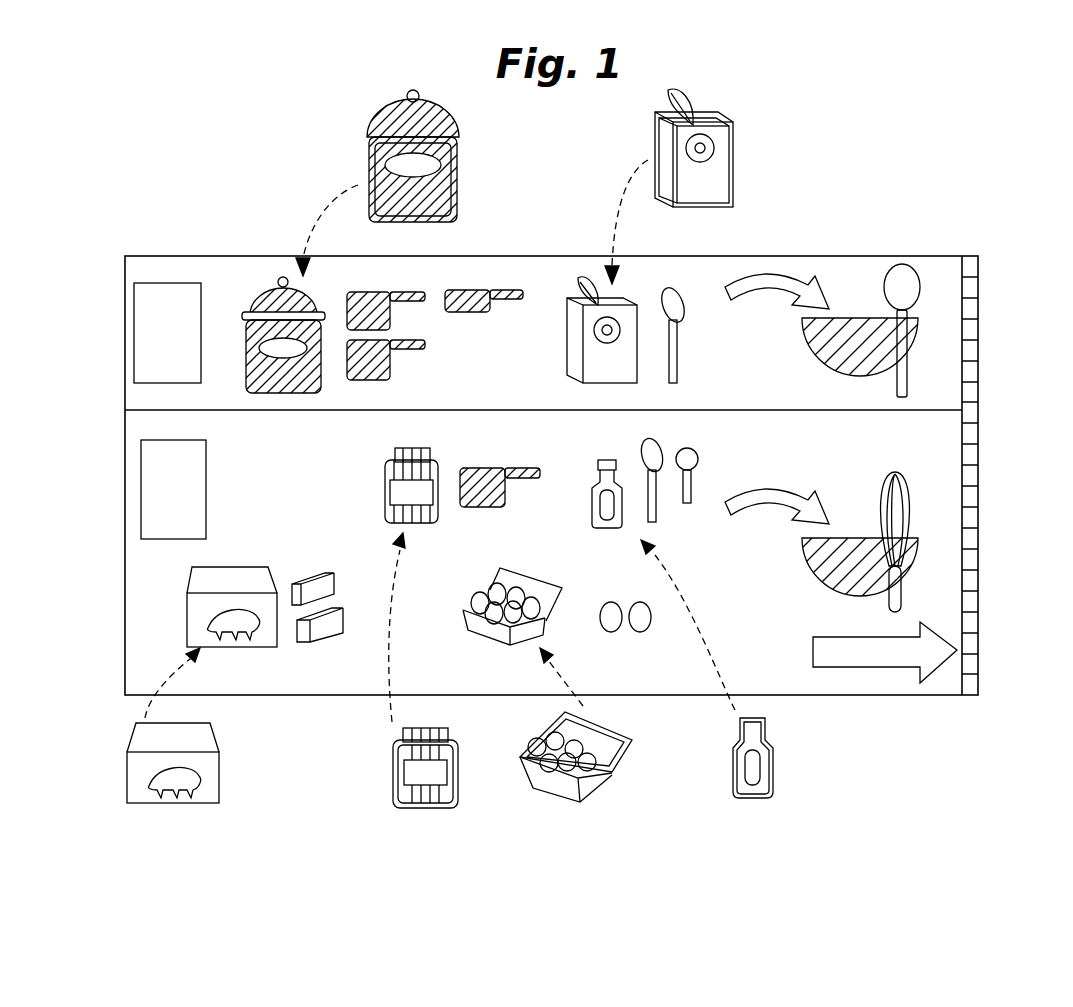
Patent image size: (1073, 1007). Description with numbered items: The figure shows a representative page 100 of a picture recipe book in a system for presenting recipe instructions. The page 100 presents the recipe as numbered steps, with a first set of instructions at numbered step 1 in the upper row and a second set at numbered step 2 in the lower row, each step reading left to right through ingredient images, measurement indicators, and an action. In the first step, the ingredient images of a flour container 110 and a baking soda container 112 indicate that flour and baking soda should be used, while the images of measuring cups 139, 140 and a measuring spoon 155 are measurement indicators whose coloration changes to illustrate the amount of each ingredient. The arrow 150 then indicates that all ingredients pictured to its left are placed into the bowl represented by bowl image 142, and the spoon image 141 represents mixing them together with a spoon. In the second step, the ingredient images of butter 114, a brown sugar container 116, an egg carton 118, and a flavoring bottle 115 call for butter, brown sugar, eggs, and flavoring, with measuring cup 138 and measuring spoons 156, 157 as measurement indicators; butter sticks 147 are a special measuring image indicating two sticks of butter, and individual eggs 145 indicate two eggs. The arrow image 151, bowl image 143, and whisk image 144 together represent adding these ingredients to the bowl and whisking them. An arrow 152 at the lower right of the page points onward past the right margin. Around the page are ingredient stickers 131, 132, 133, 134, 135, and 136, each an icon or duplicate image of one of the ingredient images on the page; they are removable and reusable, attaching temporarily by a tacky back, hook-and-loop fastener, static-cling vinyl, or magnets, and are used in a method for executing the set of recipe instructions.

The numbered step 1 is at (170, 307).
The numbered step 2 is at (163, 470).
The page 100 is at (938, 256).
The flour container 110 is at (257, 300).
The baking soda container 112 is at (568, 300).
The butter 114 is at (203, 585).
The vanilla bottle icon 115 is at (622, 520).
The brown sugar container 116 is at (387, 518).
The egg carton 118 is at (507, 640).
The ingredient sticker 131 is at (440, 118).
The ingredient sticker 132 is at (722, 142).
The ingredient sticker 133 is at (132, 763).
The ingredient sticker 134 is at (402, 793).
The ingredient sticker 135 is at (605, 747).
The flavoring bottle 136 is at (760, 750).
The measuring cup 138 is at (497, 468).
The measuring cup 139 is at (473, 290).
The measuring cup 140 is at (383, 293).
The spoon image 141 is at (898, 278).
The bowl image 142 is at (918, 329).
The bowl image 143 is at (917, 552).
The whisk image 144 is at (908, 497).
The individual eggs 145 is at (607, 650).
The butter sticks 147 is at (323, 660).
The arrow 150 is at (793, 287).
The arrow image 151 is at (820, 495).
The next step arrow 152 is at (930, 650).
The measuring spoon 155 is at (677, 290).
The measuring spoon 156 is at (661, 446).
The measuring spoon 157 is at (692, 448).